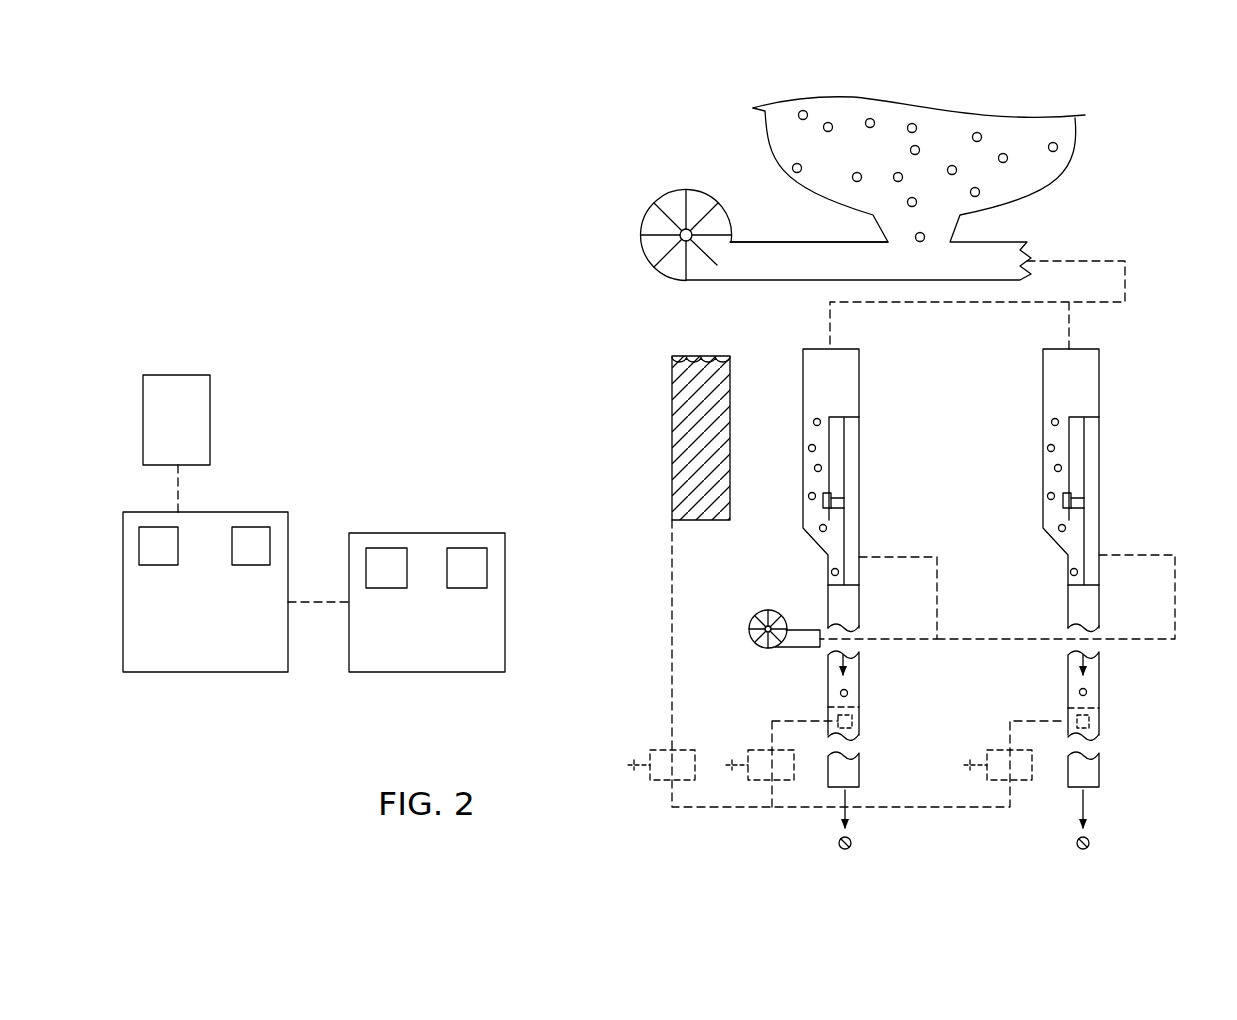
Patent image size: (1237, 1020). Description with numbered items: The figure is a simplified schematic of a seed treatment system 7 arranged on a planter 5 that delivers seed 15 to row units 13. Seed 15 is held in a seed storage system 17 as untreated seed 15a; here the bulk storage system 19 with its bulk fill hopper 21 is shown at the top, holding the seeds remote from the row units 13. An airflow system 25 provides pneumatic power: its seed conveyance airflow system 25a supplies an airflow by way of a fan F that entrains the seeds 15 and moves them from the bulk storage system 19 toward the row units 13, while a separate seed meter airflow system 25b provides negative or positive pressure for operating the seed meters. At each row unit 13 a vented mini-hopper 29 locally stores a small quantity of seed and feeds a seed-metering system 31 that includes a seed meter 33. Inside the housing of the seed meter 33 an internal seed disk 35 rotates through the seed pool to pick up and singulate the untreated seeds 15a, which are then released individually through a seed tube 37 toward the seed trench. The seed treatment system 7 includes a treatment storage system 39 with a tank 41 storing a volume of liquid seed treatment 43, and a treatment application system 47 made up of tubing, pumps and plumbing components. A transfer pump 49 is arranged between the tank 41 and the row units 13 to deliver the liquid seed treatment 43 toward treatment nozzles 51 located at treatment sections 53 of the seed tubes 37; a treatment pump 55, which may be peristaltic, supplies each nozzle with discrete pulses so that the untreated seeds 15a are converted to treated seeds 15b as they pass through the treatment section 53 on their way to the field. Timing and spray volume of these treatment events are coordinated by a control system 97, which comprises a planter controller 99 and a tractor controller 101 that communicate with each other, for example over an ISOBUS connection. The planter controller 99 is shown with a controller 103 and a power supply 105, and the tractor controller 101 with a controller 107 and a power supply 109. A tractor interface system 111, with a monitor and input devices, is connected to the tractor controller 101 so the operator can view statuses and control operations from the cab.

The planter 5 is at (455, 175).
The seed treatment system 7 is at (508, 360).
The row unit 13 is at (830, 853).
The seed 15 is at (942, 130).
The untreated seed 15a is at (978, 133).
The treated seed 15b is at (850, 838).
The seed storage system 17 is at (1070, 88).
The bulk storage system 19 is at (933, 78).
The bulk fill hopper 21 is at (855, 93).
The airflow system 25 is at (572, 222).
The seed conveyance airflow system 25a is at (655, 180).
The seed meter airflow system 25b is at (738, 630).
The vented mini-hopper 29 is at (860, 346).
The seed-metering system 31 is at (865, 460).
The seed meter 33 is at (862, 525).
The seed disk 35 is at (850, 436).
The seed tube 37 is at (862, 672).
The treatment storage system 39 is at (688, 340).
The tank 41 is at (730, 352).
The liquid seed treatment 43 is at (705, 410).
The treatment application system 47 is at (862, 730).
The transfer pump 49 is at (650, 752).
The treatment nozzle 51 is at (828, 707).
The treatment section 53 is at (862, 712).
The treatment pump 55 is at (757, 752).
The control system 97 is at (328, 435).
The planter controller 99 is at (507, 605).
The tractor controller 101 is at (292, 646).
The controller 103 is at (385, 588).
The power supply 105 is at (465, 588).
The controller 107 is at (157, 565).
The power supply 109 is at (250, 565).
The tractor interface system 111 is at (213, 420).
The fan F is at (640, 247).